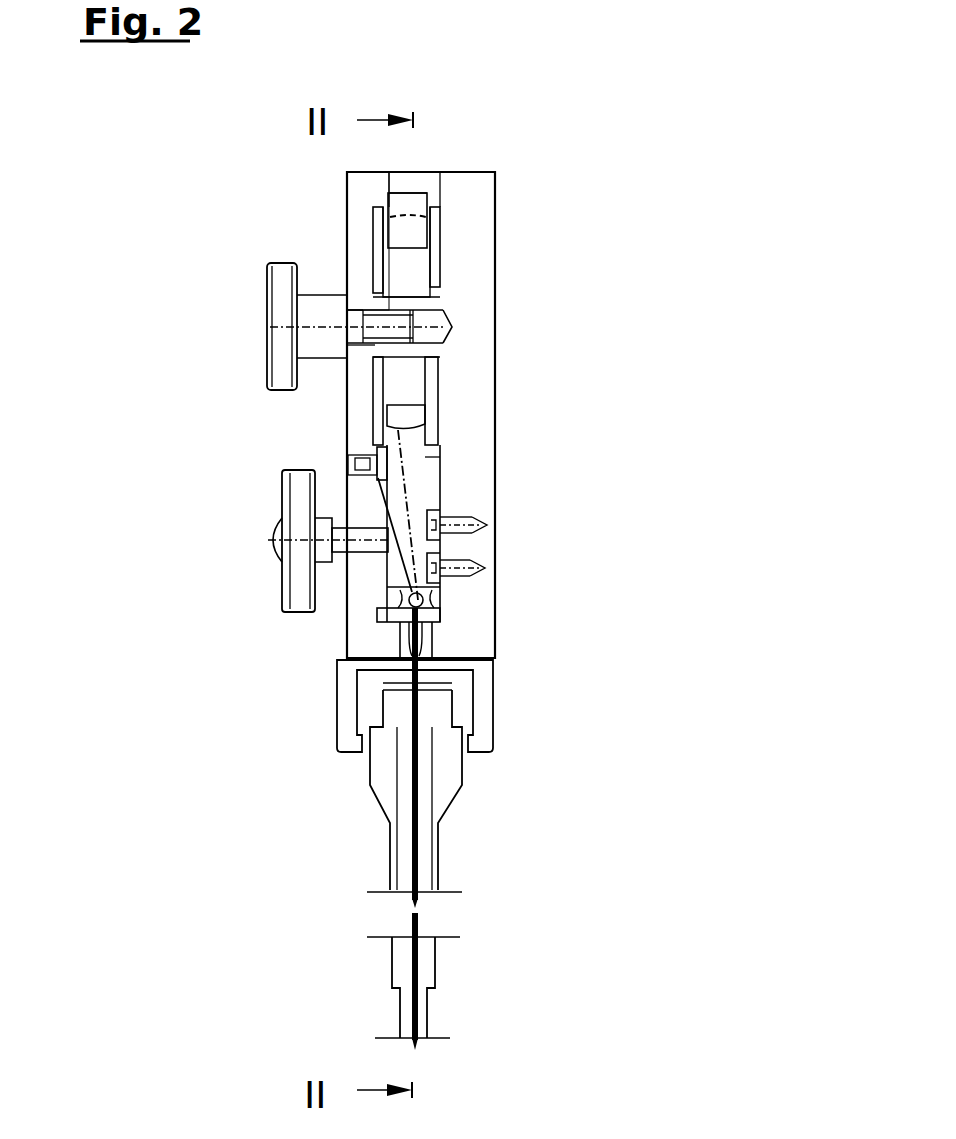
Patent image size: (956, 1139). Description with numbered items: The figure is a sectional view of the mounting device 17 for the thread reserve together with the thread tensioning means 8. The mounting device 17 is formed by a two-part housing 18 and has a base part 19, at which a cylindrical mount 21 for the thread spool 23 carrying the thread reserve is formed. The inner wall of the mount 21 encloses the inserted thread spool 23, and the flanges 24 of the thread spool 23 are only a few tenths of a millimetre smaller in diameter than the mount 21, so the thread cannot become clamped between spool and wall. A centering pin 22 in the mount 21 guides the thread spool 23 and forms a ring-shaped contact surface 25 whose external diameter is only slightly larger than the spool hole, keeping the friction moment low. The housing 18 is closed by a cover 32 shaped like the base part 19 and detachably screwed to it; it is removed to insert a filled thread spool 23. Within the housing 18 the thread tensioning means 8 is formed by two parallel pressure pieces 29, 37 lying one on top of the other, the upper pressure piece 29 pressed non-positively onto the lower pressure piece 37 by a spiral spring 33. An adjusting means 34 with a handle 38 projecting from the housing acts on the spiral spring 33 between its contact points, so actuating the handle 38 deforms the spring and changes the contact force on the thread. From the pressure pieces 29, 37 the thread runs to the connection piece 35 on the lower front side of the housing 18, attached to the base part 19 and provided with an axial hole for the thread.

The thread tensioning means 8 is at (214, 541).
The mounting device 17 is at (383, 350).
The two-part housing 18 is at (447, 94).
The base part 19 is at (478, 357).
The cylindrical mount 21 is at (503, 139).
The centering pin 22 is at (400, 300).
The thread spool 23 is at (485, 248).
The flanges 24 is at (380, 220).
The contact surface 25 is at (430, 360).
The upper pressure piece 29 is at (405, 597).
The cover 32 is at (362, 193).
The spiral spring 33 is at (445, 548).
The adjusting means 34 is at (297, 498).
The connection piece 35 is at (370, 678).
The lower pressure piece 37 is at (422, 598).
The handle 38 is at (300, 493).